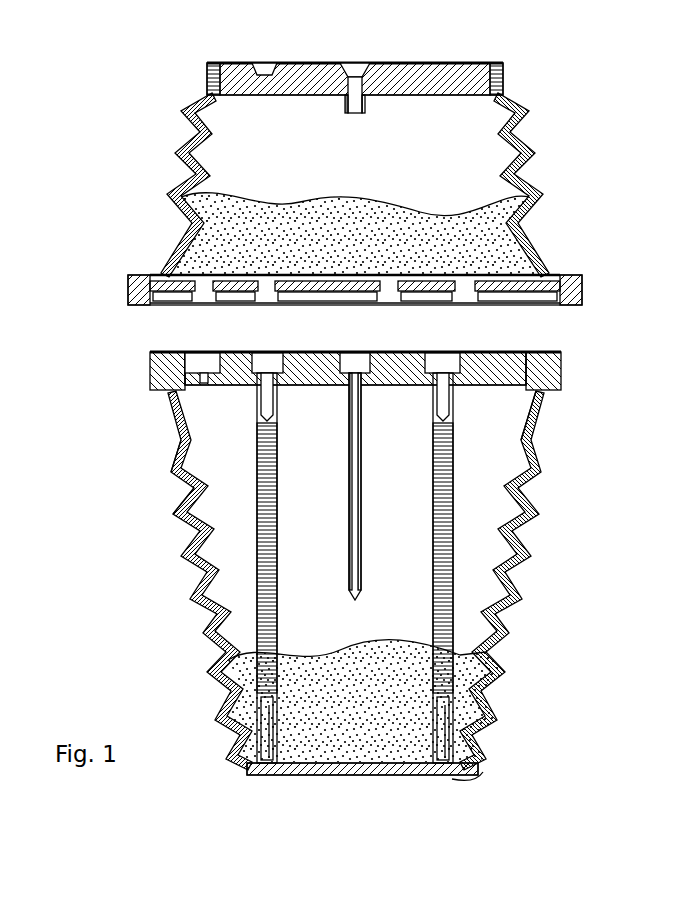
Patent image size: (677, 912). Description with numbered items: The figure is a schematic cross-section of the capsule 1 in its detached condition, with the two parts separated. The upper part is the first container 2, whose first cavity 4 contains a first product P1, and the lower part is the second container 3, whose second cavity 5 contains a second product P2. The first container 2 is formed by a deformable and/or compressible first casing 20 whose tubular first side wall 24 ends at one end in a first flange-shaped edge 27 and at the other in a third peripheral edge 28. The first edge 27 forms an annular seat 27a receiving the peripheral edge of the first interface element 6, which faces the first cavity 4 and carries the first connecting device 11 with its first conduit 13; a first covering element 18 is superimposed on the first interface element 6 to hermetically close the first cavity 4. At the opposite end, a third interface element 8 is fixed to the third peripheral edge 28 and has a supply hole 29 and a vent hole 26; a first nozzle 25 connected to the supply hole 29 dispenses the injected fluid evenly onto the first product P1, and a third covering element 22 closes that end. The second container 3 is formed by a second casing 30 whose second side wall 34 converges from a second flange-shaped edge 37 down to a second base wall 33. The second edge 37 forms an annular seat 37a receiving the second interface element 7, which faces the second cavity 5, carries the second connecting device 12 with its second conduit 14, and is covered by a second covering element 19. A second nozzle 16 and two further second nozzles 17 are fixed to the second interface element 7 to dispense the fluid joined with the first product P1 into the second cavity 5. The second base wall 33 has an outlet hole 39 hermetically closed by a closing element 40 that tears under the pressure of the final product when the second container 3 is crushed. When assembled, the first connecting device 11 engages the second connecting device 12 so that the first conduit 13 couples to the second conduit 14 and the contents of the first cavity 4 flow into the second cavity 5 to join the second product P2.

The capsule 1 is at (574, 84).
The first container 2 is at (162, 98).
The second container 3 is at (545, 516).
The first cavity 4 is at (262, 155).
The second cavity 5 is at (312, 507).
The first interface element 6 is at (395, 285).
The second interface element 7 is at (527, 447).
The third interface element 8 is at (436, 78).
The first connecting device 11 is at (582, 295).
The second connecting device 12 is at (192, 447).
The first conduit 13 is at (452, 290).
The second conduit 14 is at (200, 492).
The second nozzle 16 is at (360, 553).
The further second nozzles 17 is at (262, 542).
The first covering element 18 is at (440, 306).
The second covering element 19 is at (185, 353).
The first casing 20 is at (556, 188).
The third covering element 22 is at (385, 62).
The first side wall 24 is at (185, 160).
The first nozzle 25 is at (362, 108).
The vent hole 26 is at (264, 66).
The first flange-shaped edge 27 is at (130, 300).
The annular seat 27a is at (150, 270).
The third peripheral edge 28 is at (503, 80).
The supply hole 29 is at (355, 62).
The second casing 30 is at (184, 608).
The second base wall 33 is at (300, 762).
The second side wall 34 is at (537, 473).
The second flange-shaped edge 37 is at (562, 368).
The annular seat 37a is at (172, 410).
The outlet hole 39 is at (365, 773).
The closing element 40 is at (483, 773).
The first product P1 is at (330, 222).
The second product P2 is at (458, 678).